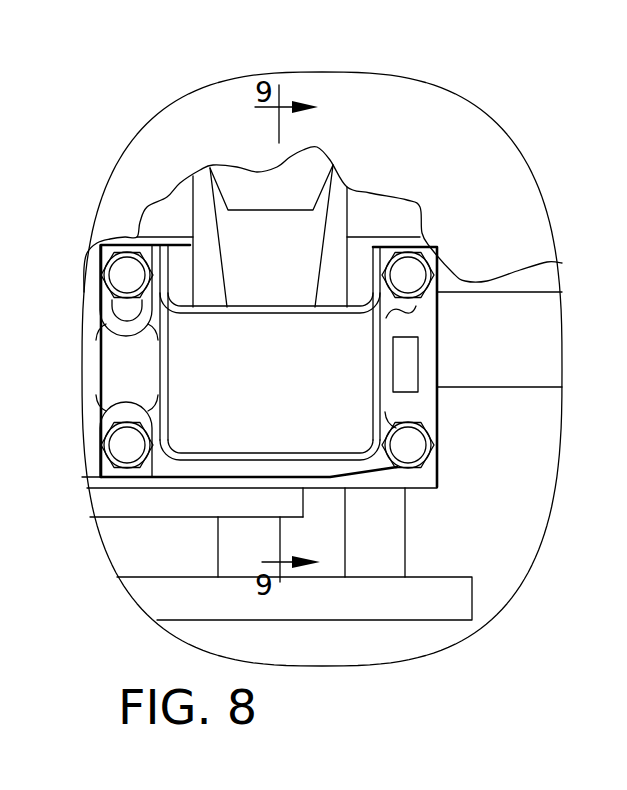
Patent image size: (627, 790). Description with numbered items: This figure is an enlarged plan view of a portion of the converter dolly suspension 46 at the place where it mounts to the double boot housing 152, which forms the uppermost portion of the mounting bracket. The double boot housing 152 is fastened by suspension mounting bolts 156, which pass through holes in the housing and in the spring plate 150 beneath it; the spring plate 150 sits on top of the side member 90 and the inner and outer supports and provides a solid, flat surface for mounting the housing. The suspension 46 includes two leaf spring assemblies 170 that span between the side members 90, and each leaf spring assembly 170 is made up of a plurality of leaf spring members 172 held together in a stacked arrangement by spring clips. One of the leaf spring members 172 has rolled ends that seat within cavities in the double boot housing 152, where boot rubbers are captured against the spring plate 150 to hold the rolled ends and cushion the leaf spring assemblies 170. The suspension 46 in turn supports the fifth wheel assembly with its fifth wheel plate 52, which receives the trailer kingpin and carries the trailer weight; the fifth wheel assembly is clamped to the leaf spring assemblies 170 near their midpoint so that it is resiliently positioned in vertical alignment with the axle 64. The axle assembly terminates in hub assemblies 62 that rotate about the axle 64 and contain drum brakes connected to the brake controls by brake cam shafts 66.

The dual leaf spring suspension 46 is at (362, 194).
The fifth wheel plate 52 is at (534, 197).
The hub assembly 62 is at (417, 643).
The axle 64 is at (118, 542).
The brake cam shaft 66 is at (392, 540).
The side member 90 is at (523, 372).
The spring plate 150 is at (418, 478).
The double boot housing 152 is at (357, 406).
The suspension mounting bolt 156 is at (140, 280).
The leaf spring assembly 170 is at (333, 220).
The leaf spring member 172 is at (302, 282).